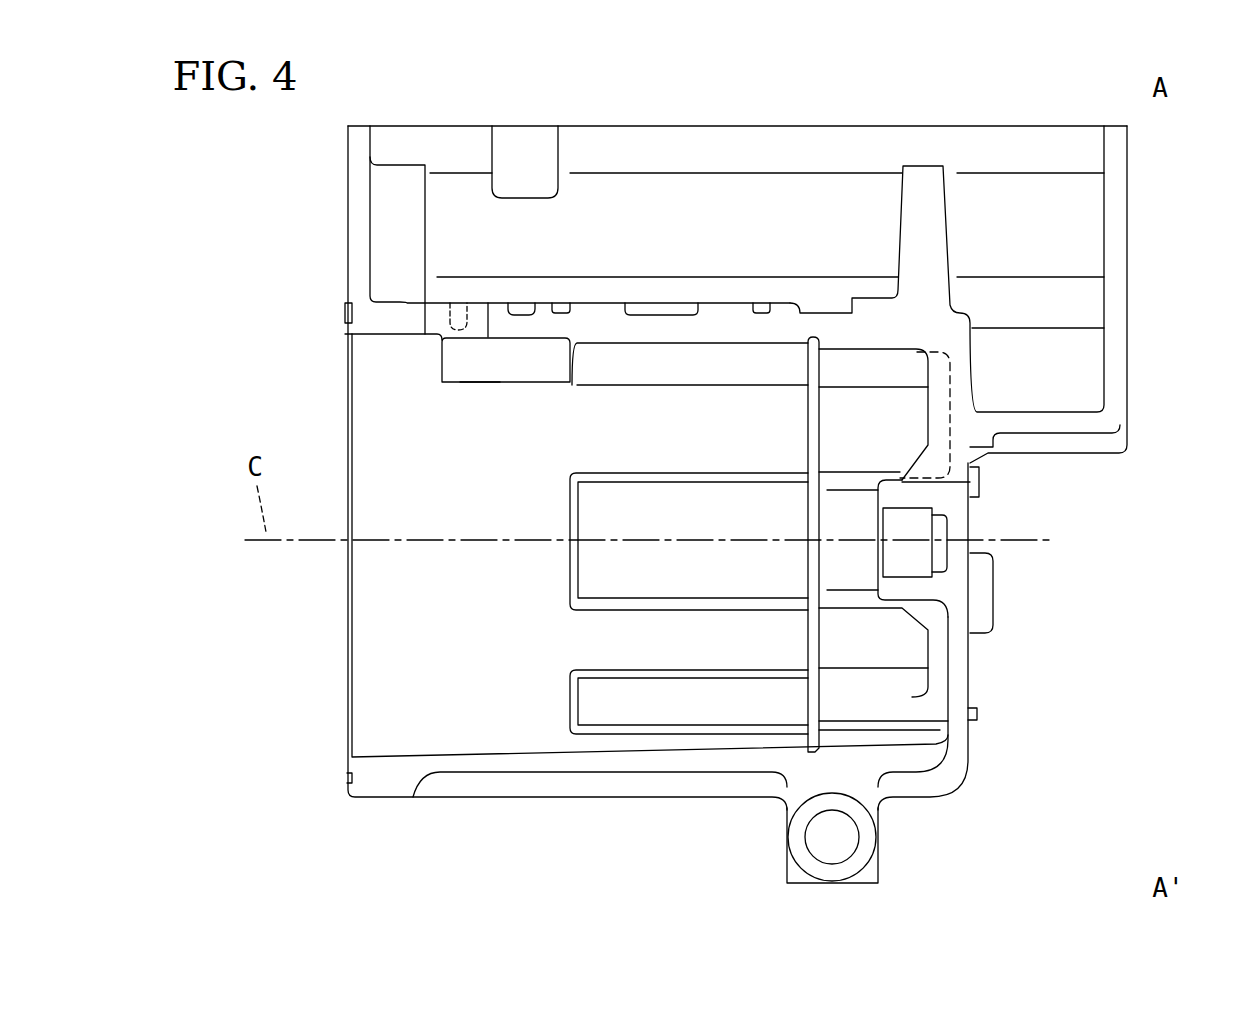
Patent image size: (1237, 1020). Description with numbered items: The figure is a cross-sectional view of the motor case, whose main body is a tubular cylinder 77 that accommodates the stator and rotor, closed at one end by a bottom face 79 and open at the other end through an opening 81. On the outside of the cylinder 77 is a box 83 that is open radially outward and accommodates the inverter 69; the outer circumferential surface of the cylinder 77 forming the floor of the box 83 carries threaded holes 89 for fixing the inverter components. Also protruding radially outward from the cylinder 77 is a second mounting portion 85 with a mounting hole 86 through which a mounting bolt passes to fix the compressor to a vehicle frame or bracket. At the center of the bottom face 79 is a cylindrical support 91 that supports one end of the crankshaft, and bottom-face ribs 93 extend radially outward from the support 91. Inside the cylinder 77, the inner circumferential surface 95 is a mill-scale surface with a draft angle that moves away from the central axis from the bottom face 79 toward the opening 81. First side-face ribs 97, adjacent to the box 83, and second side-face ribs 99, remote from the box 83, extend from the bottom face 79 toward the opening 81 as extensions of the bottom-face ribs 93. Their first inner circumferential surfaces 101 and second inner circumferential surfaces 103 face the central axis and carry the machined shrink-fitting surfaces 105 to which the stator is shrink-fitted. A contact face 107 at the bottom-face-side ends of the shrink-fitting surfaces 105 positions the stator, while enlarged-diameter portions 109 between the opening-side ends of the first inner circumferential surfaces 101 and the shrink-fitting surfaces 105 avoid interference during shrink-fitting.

The inverter 69 is at (732, 116).
The cylinder 77 is at (500, 765).
The bottom face 79 is at (960, 593).
The opening 81 is at (358, 637).
The box 83 is at (1118, 250).
The second mounting portion 85 is at (875, 836).
The mounting hole 86 is at (815, 841).
The threaded holes 89 is at (462, 300).
The cylindrical support 91 is at (915, 497).
The bottom-face ribs 93 is at (945, 378).
The inner circumferential surface 95 is at (372, 418).
The first side-face ribs 97 is at (462, 395).
The second side-face ribs 99 is at (552, 583).
The first inner circumferential surfaces 101 is at (865, 376).
The second inner circumferential surfaces 103 is at (848, 576).
The shrink-fitting surfaces 105 is at (679, 368).
The contact face 107 is at (809, 338).
The enlarged-diameter portions 109 is at (517, 376).